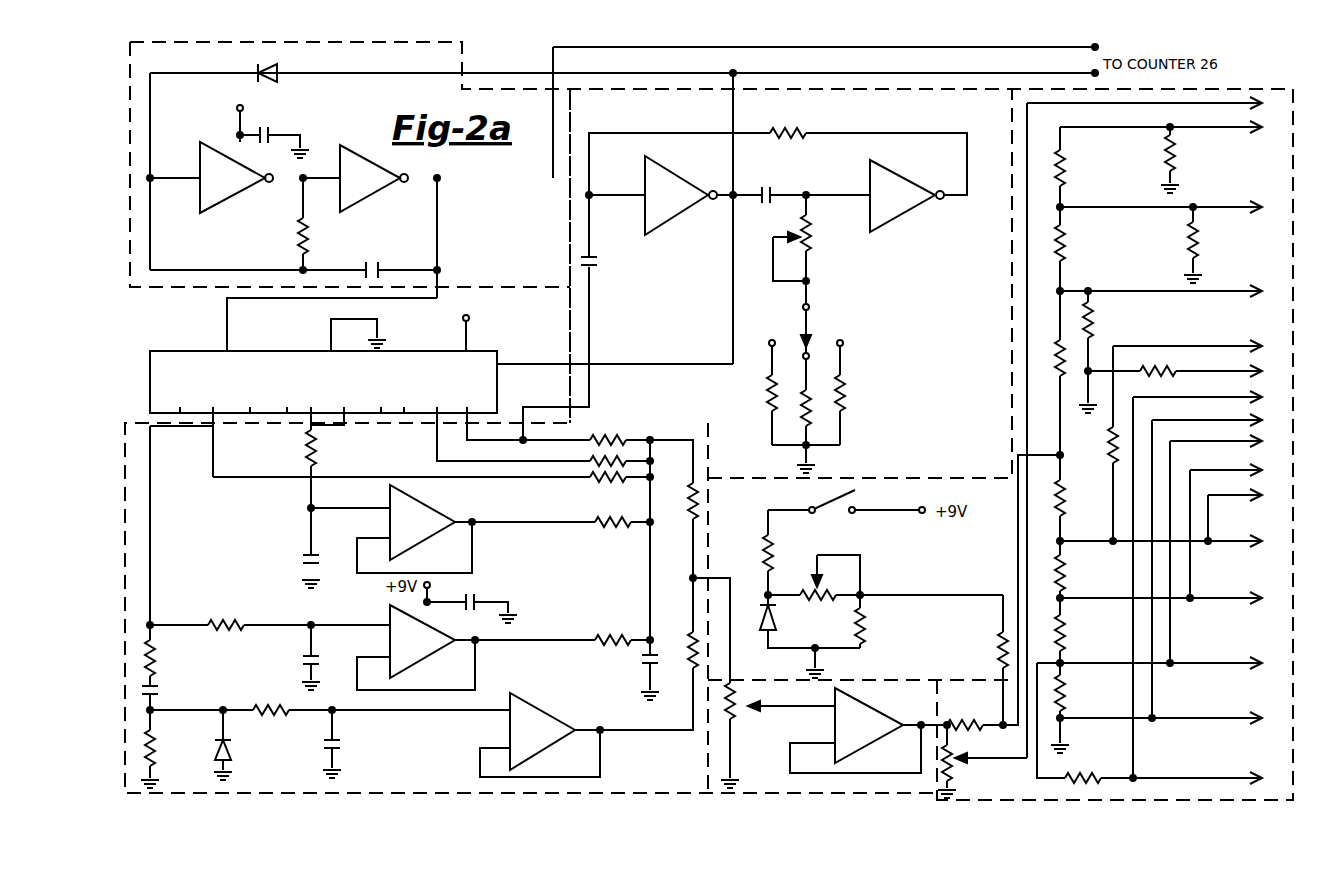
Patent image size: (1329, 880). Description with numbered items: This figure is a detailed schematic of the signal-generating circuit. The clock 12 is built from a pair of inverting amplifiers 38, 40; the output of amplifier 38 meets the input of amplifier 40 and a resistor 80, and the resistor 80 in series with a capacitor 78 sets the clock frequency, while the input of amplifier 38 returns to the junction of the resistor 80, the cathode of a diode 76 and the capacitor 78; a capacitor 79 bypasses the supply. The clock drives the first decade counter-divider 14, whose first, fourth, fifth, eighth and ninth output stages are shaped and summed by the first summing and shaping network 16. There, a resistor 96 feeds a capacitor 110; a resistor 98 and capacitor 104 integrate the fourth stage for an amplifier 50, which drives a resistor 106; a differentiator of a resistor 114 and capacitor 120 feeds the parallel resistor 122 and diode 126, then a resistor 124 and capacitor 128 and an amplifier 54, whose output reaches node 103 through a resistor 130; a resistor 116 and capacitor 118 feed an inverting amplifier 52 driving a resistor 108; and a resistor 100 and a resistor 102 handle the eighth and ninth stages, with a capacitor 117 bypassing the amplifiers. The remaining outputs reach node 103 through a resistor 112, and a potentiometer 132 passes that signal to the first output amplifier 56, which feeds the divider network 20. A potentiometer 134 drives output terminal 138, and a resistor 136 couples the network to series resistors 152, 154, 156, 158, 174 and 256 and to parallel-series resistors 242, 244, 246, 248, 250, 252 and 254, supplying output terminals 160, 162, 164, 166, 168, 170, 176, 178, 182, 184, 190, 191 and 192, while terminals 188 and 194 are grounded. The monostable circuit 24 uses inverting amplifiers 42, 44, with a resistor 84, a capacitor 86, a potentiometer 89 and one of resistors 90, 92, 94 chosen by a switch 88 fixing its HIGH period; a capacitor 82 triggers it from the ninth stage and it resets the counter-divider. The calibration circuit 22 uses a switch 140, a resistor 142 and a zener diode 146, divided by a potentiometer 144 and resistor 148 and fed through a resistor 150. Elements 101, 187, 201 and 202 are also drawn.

The clock 12 is at (465, 72).
The first decade counter-divider 14 is at (195, 330).
The first summing and shaping network 16 is at (128, 558).
The divider network 20 is at (1005, 412).
The calibration circuit 22 is at (715, 475).
The monostable circuit 24 is at (992, 86).
The inverting amplifier 38 is at (245, 198).
The inverting amplifier 40 is at (370, 196).
The inverting amplifier 42 is at (660, 228).
The inverting amplifier 44 is at (905, 222).
The amplifier 50 is at (435, 505).
The amplifier 52 is at (425, 655).
The amplifier 54 is at (505, 722).
The first output amplifier 56 is at (875, 700).
The diode 76 is at (280, 73).
The capacitor 78 is at (372, 262).
The capacitor 79 is at (272, 132).
The resistor 80 is at (300, 238).
The capacitor 82 is at (592, 266).
The resistor 84 is at (800, 131).
The capacitor 86 is at (774, 188).
The switch 88 is at (812, 318).
The potentiometer 89 is at (812, 250).
The resistor 90 is at (765, 388).
The resistor 92 is at (800, 392).
The resistor 94 is at (846, 388).
The resistor 96 is at (620, 500).
The resistor 98 is at (318, 447).
The resistor 100 is at (590, 479).
The resistor 101 is at (688, 498).
The resistor 102 is at (600, 438).
The node 103 is at (690, 580).
The capacitor 104 is at (303, 556).
The resistor 106 is at (580, 540).
The resistor 108 is at (612, 640).
The capacitor 110 is at (640, 662).
The resistor 112 is at (690, 486).
The resistor 114 is at (157, 660).
The resistor 116 is at (230, 622).
The capacitor 117 is at (476, 598).
The capacitor 118 is at (303, 663).
The capacitor 120 is at (162, 690).
The resistor 122 is at (156, 755).
The resistor 124 is at (262, 712).
The diode 126 is at (231, 758).
The capacitor 128 is at (342, 743).
The resistor 130 is at (688, 650).
The potentiometer 132 is at (735, 705).
The potentiometer 134 is at (952, 778).
The resistor 136 is at (985, 698).
The output terminal 138 is at (1258, 105).
The switch 140 is at (828, 512).
The resistor 142 is at (765, 545).
The potentiometer 144 is at (806, 610).
The zener diode 146 is at (762, 625).
The resistor 148 is at (868, 622).
The resistor 150 is at (998, 640).
The resistor 152 is at (1063, 498).
The resistor 154 is at (1063, 575).
The resistor 156 is at (1063, 638).
The resistor 158 is at (1063, 695).
The output terminal 160 is at (1258, 290).
The output terminal 162 is at (1252, 212).
The output terminal 164 is at (1256, 362).
The output terminal 166 is at (1256, 390).
The output terminal 168 is at (1255, 132).
The output terminal 170 is at (1258, 342).
The resistor 174 is at (1083, 776).
The output terminal 176 is at (1258, 548).
The output terminal 178 is at (1258, 500).
The output terminal 182 is at (1250, 608).
The output terminal 184 is at (1256, 460).
The reference voltage circuit 187 is at (890, 675).
The output terminal 188 is at (1255, 722).
The output terminal 190 is at (1252, 668).
The output terminal 191 is at (1258, 775).
The output terminal 192 is at (1256, 434).
The output terminal 194 is at (1256, 412).
The conductor 201 is at (960, 47).
The conductor 202 is at (900, 22).
The resistor 242 is at (1057, 360).
The resistor 244 is at (1065, 245).
The resistor 246 is at (1065, 178).
The resistor 248 is at (1165, 157).
The resistor 250 is at (1190, 238).
The resistor 252 is at (1092, 322).
The resistor 254 is at (1162, 370).
The resistor 256 is at (1110, 443).